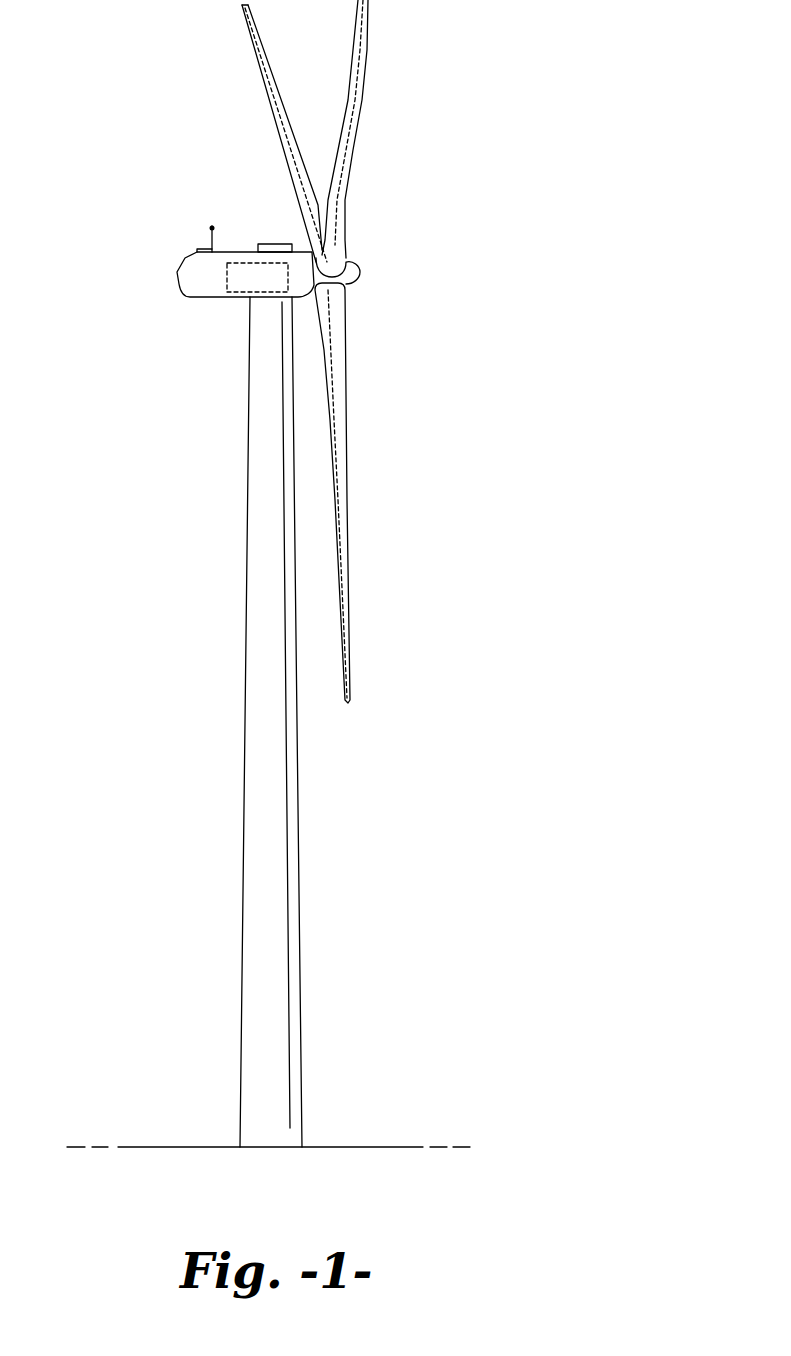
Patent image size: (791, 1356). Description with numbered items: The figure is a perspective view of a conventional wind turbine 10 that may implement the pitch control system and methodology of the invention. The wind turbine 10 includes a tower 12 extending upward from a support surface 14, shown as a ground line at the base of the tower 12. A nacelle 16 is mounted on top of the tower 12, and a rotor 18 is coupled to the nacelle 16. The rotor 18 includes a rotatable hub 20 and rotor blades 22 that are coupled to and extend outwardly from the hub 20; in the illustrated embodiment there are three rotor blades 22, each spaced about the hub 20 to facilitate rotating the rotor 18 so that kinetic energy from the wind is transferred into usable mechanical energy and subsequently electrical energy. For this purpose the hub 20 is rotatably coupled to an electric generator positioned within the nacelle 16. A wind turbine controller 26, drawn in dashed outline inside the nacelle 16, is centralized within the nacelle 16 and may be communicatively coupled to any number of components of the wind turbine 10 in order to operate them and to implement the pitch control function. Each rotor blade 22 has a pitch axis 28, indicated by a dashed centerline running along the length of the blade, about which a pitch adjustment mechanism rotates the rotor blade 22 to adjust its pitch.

The wind turbine 10 is at (488, 163).
The tower 12 is at (275, 852).
The support surface 14 is at (208, 1146).
The nacelle 16 is at (222, 298).
The rotor 18 is at (370, 252).
The rotatable hub 20 is at (360, 272).
The rotor blade 22 is at (268, 61).
The wind turbine controller 26 is at (245, 262).
The pitch axis 28 is at (275, 145).